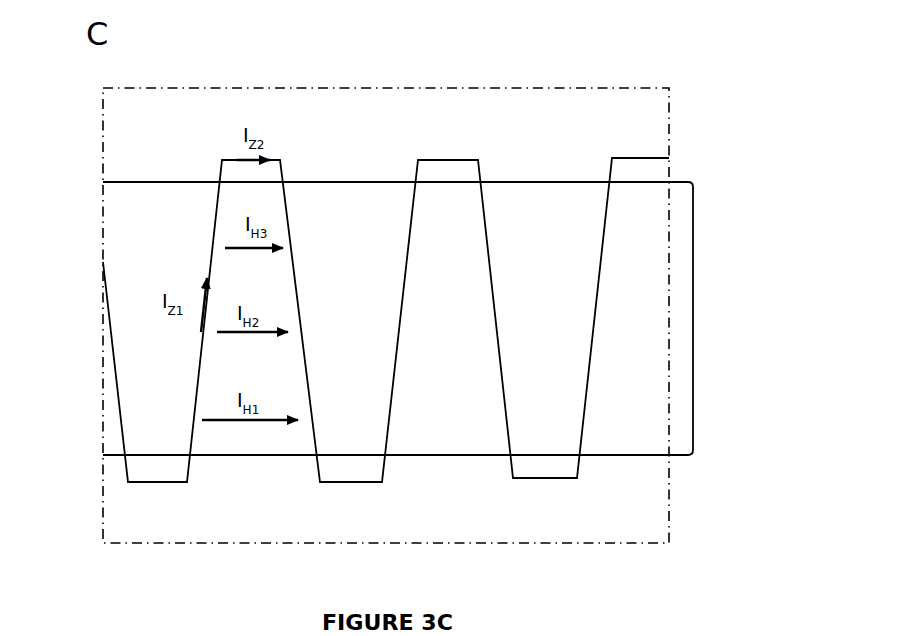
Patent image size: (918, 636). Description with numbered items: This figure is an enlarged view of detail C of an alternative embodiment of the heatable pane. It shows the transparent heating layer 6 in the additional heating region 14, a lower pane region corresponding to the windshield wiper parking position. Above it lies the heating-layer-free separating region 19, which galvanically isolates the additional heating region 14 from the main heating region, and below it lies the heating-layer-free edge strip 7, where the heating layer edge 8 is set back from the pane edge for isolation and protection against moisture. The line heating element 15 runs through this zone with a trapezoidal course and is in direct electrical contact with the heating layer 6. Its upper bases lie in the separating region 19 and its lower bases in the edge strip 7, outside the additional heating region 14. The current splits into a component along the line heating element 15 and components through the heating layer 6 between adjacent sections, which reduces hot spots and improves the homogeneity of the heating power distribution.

The edge strip 7 is at (605, 520).
The separating region 19 is at (645, 120).
The heating layer 6 is at (693, 318).
The heating layer edge 8 is at (637, 458).
The line heating element 15 is at (600, 273).
The additional heating region 14 is at (137, 247).